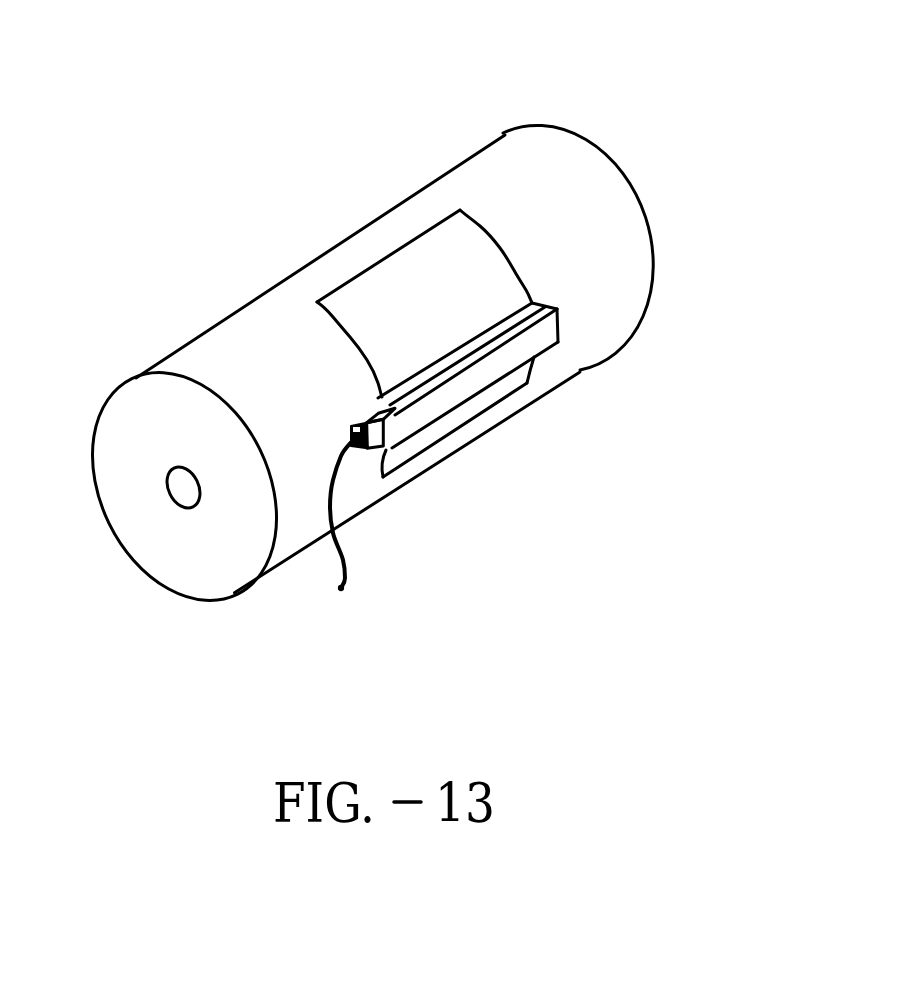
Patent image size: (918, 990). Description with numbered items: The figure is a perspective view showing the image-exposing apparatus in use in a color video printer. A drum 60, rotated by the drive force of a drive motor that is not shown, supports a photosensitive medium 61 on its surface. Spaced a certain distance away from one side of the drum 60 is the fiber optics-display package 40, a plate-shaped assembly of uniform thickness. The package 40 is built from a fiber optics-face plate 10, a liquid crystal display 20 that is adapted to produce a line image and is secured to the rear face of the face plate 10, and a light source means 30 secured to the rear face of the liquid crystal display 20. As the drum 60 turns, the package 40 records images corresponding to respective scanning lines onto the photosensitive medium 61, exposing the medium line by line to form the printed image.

The fiber optics-face plate 10 is at (483, 330).
The liquid crystal display 20 is at (533, 303).
The light source means 30 is at (517, 350).
The fiber optics-display package 40 is at (556, 306).
The drum 60 is at (238, 357).
The photosensitive medium 61 is at (423, 260).